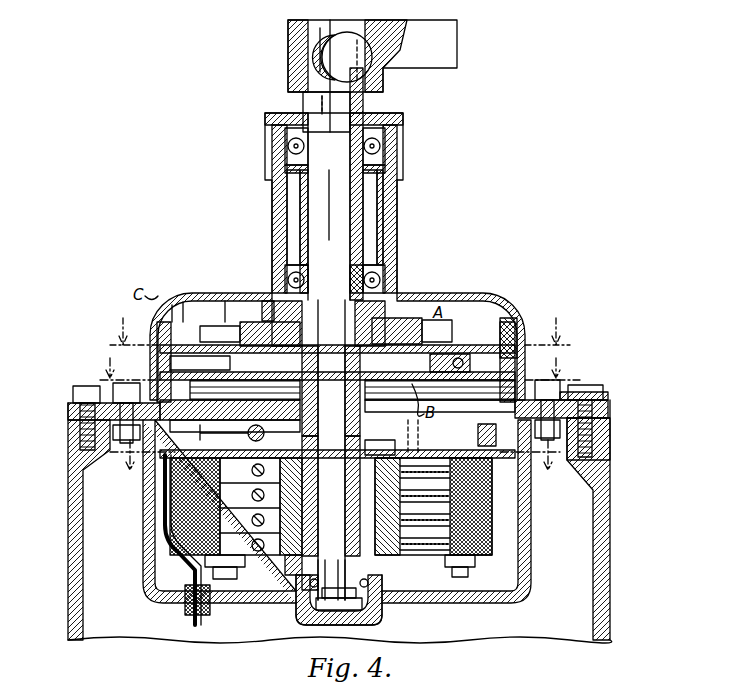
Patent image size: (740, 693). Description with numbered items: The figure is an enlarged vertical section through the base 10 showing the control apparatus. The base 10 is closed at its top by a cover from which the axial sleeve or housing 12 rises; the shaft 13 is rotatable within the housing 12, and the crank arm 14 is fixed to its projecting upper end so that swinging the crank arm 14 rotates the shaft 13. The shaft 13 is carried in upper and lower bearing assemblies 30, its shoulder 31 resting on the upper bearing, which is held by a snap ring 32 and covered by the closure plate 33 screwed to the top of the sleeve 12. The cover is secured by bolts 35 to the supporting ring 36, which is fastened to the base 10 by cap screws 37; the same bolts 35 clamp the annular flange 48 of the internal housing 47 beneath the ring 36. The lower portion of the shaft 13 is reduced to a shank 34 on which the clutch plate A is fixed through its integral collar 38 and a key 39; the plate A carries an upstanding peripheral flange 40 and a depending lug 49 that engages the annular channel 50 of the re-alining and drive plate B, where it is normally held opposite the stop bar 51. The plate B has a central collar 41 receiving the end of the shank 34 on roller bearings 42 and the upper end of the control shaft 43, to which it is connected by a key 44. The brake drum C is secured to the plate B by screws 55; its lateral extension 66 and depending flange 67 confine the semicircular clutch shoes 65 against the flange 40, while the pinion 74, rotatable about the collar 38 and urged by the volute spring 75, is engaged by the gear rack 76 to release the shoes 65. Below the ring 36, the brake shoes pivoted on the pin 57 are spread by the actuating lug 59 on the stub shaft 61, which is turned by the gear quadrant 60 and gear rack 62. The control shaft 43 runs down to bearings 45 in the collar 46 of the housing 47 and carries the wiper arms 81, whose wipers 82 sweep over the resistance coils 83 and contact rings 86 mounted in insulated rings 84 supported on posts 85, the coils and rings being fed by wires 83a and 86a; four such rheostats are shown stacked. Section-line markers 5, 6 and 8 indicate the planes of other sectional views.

The crank arm 14 is at (450, 45).
The shaft 13 is at (305, 100).
The external shoulder 31 is at (321, 112).
The closure plate 33 is at (372, 110).
The sleeve or housing 12 is at (400, 200).
The bearing assemblies 30 is at (400, 150).
The snap ring 32 is at (394, 170).
The key 39 is at (340, 278).
The shank 34 is at (340, 298).
The upwardly-projecting flange 40 is at (480, 302).
The screws 55 is at (505, 326).
The gear rack 76 is at (263, 300).
The clutch shoes 65 is at (186, 302).
The lateral extension 66 is at (173, 310).
The downwardly projecting flange 67 is at (228, 306).
The volute spring 75 is at (290, 331).
The gear or pinion 74 is at (378, 316).
The collar 38 is at (312, 340).
The roller bearings 42 is at (331, 450).
The lug 49 is at (240, 363).
The annular channel 50 is at (432, 363).
The stop element or bar 51 is at (156, 356).
The bolts 35 is at (545, 395).
The cap screws 37 is at (578, 395).
The stub shaft 61 is at (226, 408).
The sleeve or collar 41 is at (300, 408).
The key 44 is at (360, 408).
The base 10 is at (110, 388).
The annular flange 48 is at (608, 444).
The actuating lug 59 is at (106, 406).
The supporting ring 36 is at (604, 410).
The section line 6 is at (335, 331).
The section line 8 is at (333, 369).
The section line 5 is at (336, 457).
The gear rack 62 is at (265, 436).
The pin or bolt 57 is at (496, 438).
The contact ring 86 is at (390, 438).
The resistance coil 83 is at (416, 438).
The gear quadrant or segment 60 is at (265, 496).
The insulated ring 84 is at (488, 485).
The internal housing 47 is at (143, 555).
The wiper or contact element 82 is at (243, 590).
The wiper arm 81 is at (290, 566).
The bearings 45 is at (298, 586).
The control shaft 43 is at (360, 572).
The collar 46 is at (382, 588).
The posts or bolts 85 is at (462, 578).
The wire 83a is at (195, 622).
The wire 86a is at (201, 625).